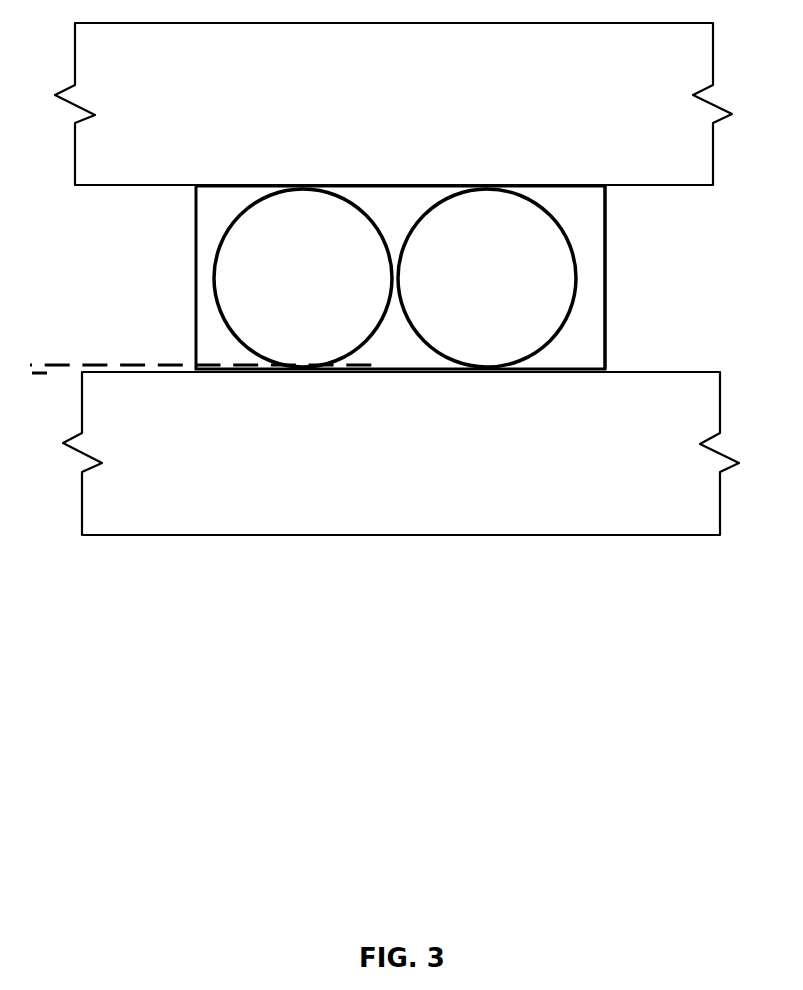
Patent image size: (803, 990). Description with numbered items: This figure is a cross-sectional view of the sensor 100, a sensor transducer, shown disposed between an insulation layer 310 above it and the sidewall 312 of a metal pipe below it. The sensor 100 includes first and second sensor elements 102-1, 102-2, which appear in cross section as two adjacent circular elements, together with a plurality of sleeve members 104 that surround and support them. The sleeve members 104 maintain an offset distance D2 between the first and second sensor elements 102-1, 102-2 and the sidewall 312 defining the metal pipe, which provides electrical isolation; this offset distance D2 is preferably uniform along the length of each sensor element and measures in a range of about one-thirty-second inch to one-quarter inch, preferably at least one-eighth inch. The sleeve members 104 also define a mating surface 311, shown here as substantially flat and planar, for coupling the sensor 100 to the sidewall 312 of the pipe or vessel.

The insulation layer 310 is at (367, 122).
The sidewall 312 is at (366, 469).
The mating surface 311 is at (535, 384).
The sensor 100 is at (184, 240).
The sleeve member 104 is at (617, 276).
The first sensor element 102-1 is at (326, 289).
The second sensor element 102-2 is at (510, 289).
The offset distance D2 is at (67, 400).